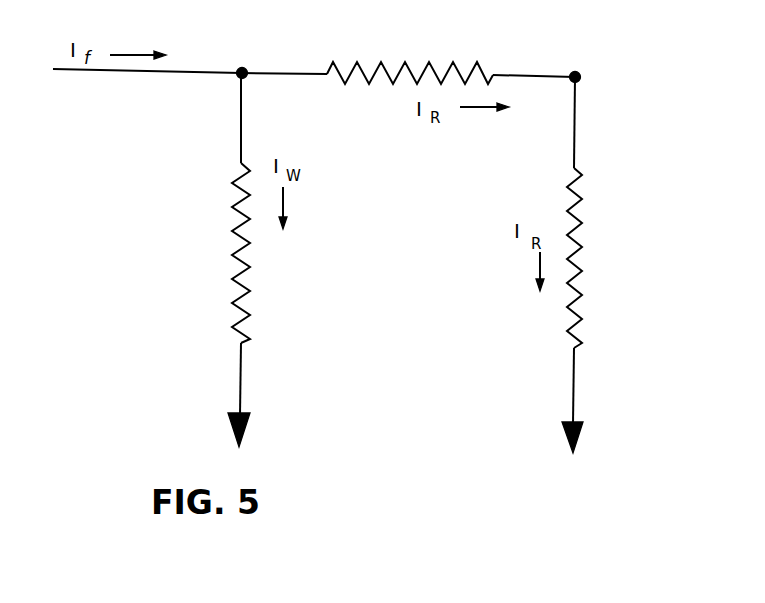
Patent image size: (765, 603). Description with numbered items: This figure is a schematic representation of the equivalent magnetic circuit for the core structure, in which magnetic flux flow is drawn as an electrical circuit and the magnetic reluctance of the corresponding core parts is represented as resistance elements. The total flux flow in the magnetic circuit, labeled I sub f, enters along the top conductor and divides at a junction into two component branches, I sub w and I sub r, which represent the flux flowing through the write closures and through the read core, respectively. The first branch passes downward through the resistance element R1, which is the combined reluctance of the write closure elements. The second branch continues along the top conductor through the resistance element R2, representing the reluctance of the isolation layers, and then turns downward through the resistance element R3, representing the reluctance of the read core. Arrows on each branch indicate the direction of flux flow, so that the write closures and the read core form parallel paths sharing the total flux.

The combined reluctance of the write closure elements R1 is at (242, 263).
The reluctance of the isolation layers R2 is at (385, 62).
The reluctance of the read core R3 is at (580, 267).